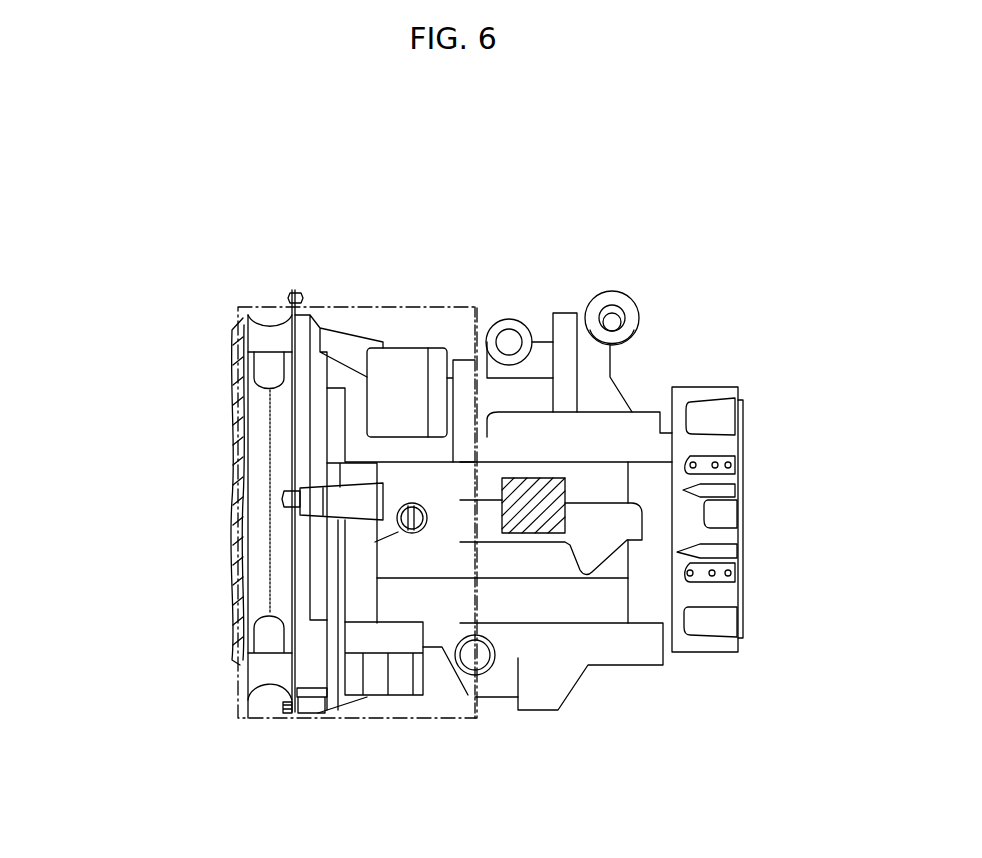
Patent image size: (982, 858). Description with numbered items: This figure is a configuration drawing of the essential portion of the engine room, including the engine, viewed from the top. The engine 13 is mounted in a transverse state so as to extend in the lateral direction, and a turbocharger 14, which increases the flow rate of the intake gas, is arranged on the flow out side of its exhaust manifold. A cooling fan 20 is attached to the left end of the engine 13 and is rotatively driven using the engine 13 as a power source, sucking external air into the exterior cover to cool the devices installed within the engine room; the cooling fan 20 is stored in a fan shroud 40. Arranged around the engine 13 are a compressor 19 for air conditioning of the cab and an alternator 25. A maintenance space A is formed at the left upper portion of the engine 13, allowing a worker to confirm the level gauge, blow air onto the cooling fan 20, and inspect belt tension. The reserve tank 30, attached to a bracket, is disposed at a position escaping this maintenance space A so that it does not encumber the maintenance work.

The maintenance space A is at (240, 307).
The engine 13 is at (670, 662).
The turbocharger 14 is at (571, 317).
The compressor 19 is at (423, 697).
The cooling fan 20 is at (242, 585).
The alternator 25 is at (402, 318).
The reserve tank 30 is at (567, 520).
The fan shroud 40 is at (310, 703).